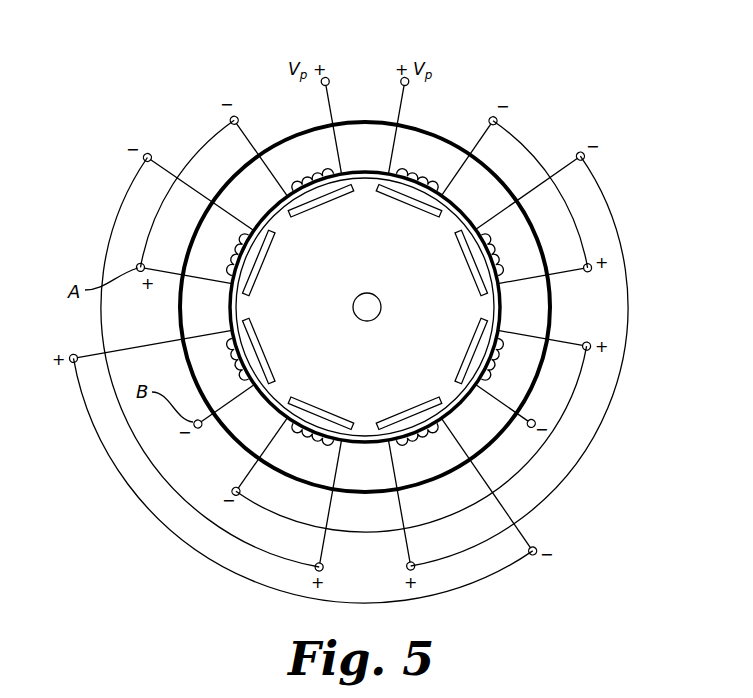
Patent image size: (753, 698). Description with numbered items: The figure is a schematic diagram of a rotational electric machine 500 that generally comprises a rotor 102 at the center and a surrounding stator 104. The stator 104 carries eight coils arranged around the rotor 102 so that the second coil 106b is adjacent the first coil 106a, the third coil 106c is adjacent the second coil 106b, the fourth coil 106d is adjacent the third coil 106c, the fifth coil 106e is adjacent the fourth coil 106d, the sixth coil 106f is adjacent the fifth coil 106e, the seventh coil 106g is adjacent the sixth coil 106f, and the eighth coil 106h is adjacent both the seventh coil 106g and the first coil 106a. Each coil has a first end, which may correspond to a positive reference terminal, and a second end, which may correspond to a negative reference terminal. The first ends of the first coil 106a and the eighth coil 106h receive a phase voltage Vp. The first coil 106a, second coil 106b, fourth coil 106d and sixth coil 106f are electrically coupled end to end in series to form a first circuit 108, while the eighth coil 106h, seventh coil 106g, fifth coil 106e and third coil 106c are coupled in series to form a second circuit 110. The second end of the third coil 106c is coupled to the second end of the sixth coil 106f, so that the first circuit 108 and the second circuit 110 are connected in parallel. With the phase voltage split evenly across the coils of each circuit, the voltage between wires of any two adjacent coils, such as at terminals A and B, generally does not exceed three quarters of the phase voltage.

The rotor 102 is at (313, 359).
The stator 104 is at (362, 121).
The first coil 106a is at (360, 162).
The second coil 106b is at (241, 228).
The third coil 106c is at (226, 334).
The fourth coil 106d is at (282, 422).
The fifth coil 106e is at (382, 449).
The sixth coil 106f is at (452, 404).
The seventh coil 106g is at (494, 286).
The eighth coil 106h is at (450, 188).
The first circuit 108 is at (104, 261).
The second circuit 110 is at (628, 328).
The rotational electric machine 500 is at (573, 35).